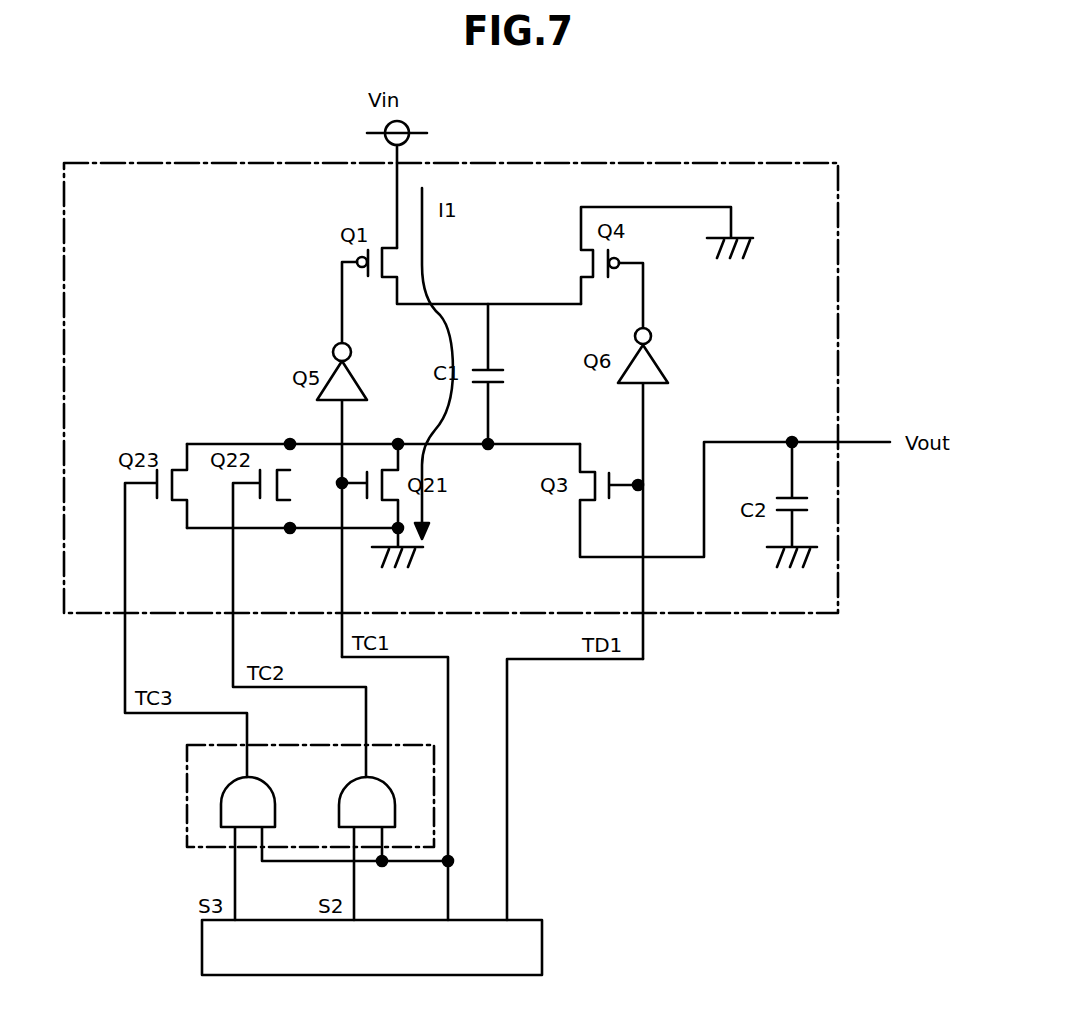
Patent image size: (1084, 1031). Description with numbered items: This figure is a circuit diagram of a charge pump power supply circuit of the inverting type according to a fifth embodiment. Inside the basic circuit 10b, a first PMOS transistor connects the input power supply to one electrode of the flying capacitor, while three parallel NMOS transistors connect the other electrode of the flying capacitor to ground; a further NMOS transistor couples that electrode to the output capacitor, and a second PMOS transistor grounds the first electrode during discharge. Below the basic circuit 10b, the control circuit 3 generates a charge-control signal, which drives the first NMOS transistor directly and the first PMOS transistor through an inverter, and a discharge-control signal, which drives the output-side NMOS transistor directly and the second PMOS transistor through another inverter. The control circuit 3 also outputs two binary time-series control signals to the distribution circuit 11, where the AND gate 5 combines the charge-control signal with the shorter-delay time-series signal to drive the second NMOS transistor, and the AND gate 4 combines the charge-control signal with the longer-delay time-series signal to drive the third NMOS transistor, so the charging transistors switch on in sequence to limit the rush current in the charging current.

The basic circuit 10b is at (550, 163).
The distribution circuit 11 is at (187, 803).
The AND gate 4 is at (268, 782).
The AND gate 5 is at (388, 782).
The control circuit 3 is at (542, 940).